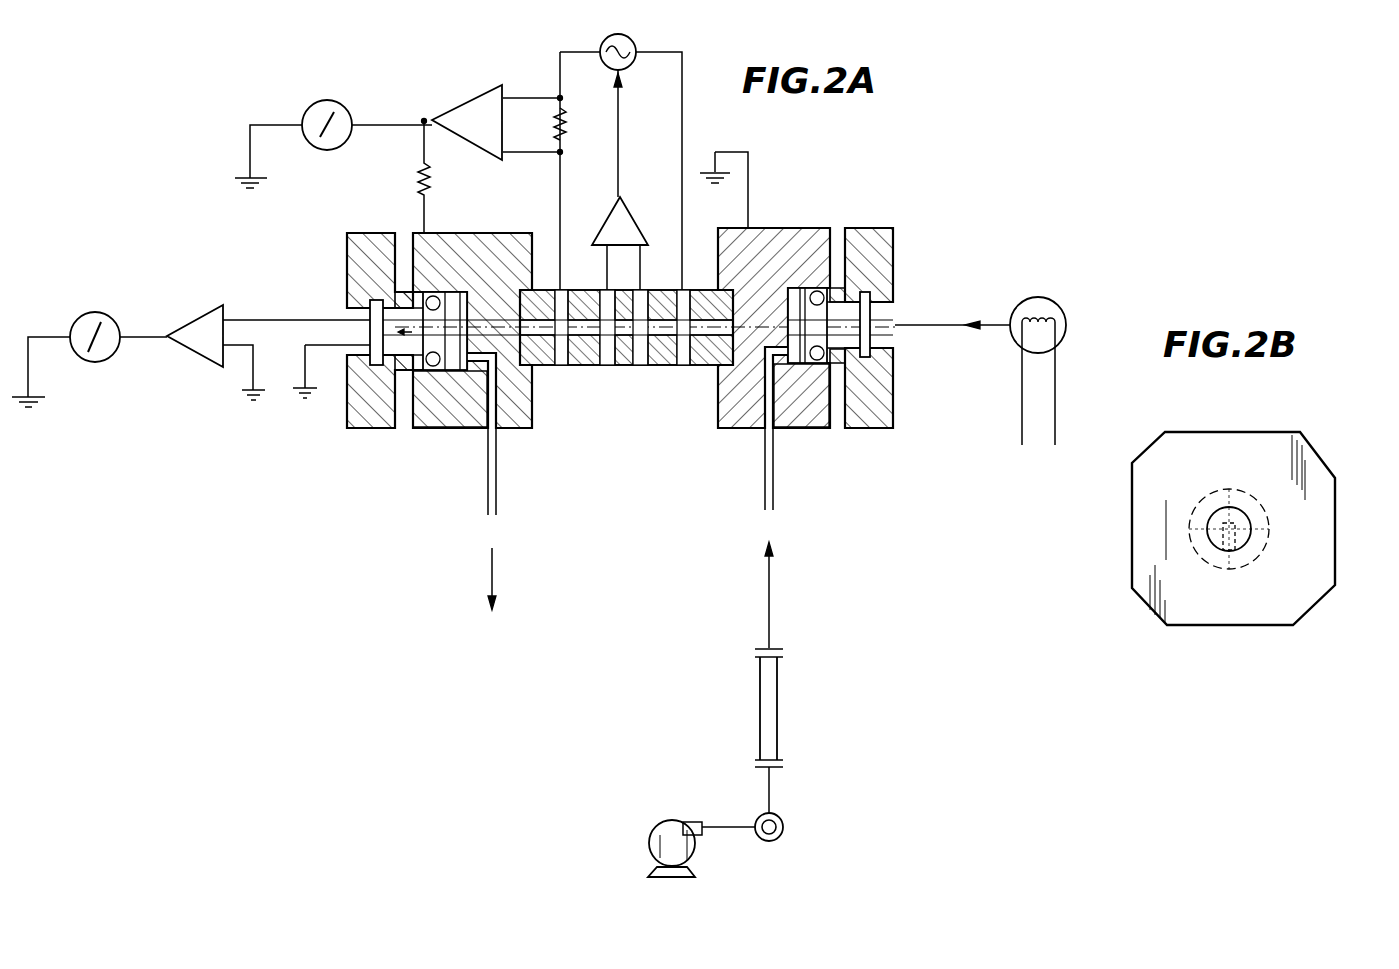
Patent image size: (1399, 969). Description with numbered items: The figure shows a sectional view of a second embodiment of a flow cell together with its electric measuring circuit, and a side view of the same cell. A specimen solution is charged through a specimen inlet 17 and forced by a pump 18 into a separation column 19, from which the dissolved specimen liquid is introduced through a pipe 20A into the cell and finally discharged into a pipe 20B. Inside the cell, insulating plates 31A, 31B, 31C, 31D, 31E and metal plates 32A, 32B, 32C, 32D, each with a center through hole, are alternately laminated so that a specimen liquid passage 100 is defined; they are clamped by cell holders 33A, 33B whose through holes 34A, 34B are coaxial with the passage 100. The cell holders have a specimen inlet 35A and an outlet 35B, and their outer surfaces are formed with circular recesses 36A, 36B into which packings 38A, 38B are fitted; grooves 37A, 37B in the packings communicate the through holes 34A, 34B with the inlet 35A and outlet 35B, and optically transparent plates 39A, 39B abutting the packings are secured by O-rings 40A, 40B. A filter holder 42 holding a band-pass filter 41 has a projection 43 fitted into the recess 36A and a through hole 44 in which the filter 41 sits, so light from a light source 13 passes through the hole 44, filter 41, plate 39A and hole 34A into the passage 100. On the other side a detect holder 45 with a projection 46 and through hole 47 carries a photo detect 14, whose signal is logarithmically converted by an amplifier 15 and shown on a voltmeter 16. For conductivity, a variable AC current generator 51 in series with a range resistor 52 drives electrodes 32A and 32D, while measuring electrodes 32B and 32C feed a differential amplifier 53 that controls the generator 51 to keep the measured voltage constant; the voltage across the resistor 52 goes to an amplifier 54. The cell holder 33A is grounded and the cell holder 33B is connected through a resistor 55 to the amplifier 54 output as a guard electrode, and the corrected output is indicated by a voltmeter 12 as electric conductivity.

In FIG. 2A, the voltmeter 12 is at (349, 108).
In FIG. 2A, the light source 13 is at (1050, 297).
In FIG. 2A, the photo detect 14 is at (375, 358).
In FIG. 2A, the amplifier 15 is at (193, 353).
In FIG. 2A, the voltmeter 16 is at (90, 362).
In FIG. 2A, the specimen inlet 17 is at (785, 820).
In FIG. 2A, the pump 18 is at (668, 820).
In FIG. 2A, the separation column 19 is at (778, 710).
In FIG. 2A, the pipe 20A is at (773, 480).
In FIG. 2A, the pipe 20B is at (497, 497).
In FIG. 2A, the insulating plate 31A is at (708, 290).
In FIG. 2A, the insulating plate 31B is at (665, 365).
In FIG. 2A, the insulating plate 31C is at (622, 365).
In FIG. 2A, the insulating plate 31D is at (582, 365).
In FIG. 2A, the insulating plate 31E is at (537, 365).
In FIG. 2A, the metal plate 32A is at (683, 365).
In FIG. 2A, the metal plate 32B is at (640, 365).
In FIG. 2A, the metal plate 32C is at (607, 365).
In FIG. 2A, the metal plate 32D is at (562, 365).
In FIG. 2A, the cell holder 33A is at (845, 428).
In FIG. 2B, the cell holder 33A is at (1147, 452).
In FIG. 2A, the cell holder 33B is at (432, 428).
In FIG. 2A, the through hole 34A is at (800, 290).
In FIG. 2B, the through hole 34A is at (1230, 507).
In FIG. 2A, the through hole 34B is at (460, 292).
In FIG. 2A, the specimen inlet 35A is at (790, 428).
In FIG. 2B, the specimen inlet 35A is at (1230, 551).
In FIG. 2A, the outlet 35B is at (465, 428).
In FIG. 2A, the circular recess 36A is at (895, 417).
In FIG. 2B, the circular recess 36A is at (1273, 533).
In FIG. 2A, the circular recess 36B is at (405, 428).
In FIG. 2A, the groove 37A is at (895, 338).
In FIG. 2B, the groove 37A is at (1217, 537).
In FIG. 2A, the groove 37B is at (345, 430).
In FIG. 2A, the packing 38A is at (805, 240).
In FIG. 2A, the packing 38B is at (478, 250).
In FIG. 2A, the optically transparent plate 39A is at (817, 293).
In FIG. 2A, the optically transparent plate 39B is at (436, 295).
In FIG. 2A, the O-ring 40A is at (865, 238).
In FIG. 2A, the O-ring 40B is at (398, 290).
In FIG. 2A, the band-pass filter 41 is at (895, 316).
In FIG. 2A, the filter holder 42 is at (875, 428).
In FIG. 2A, the projection 43 is at (895, 382).
In FIG. 2A, the through hole 44 is at (895, 303).
In FIG. 2A, the detect holder 45 is at (375, 432).
In FIG. 2A, the projection 46 is at (394, 232).
In FIG. 2A, the through hole 47 is at (377, 317).
In FIG. 2A, the variable AC current generator 51 is at (636, 64).
In FIG. 2A, the range resistor 52 is at (572, 138).
In FIG. 2A, the differential amplifier 53 is at (636, 232).
In FIG. 2A, the amplifier 54 is at (460, 104).
In FIG. 2A, the resistor 55 is at (423, 165).
In FIG. 2A, the specimen liquid passage 100 is at (552, 290).
In FIG. 2B, the specimen liquid passage 100 is at (1240, 522).